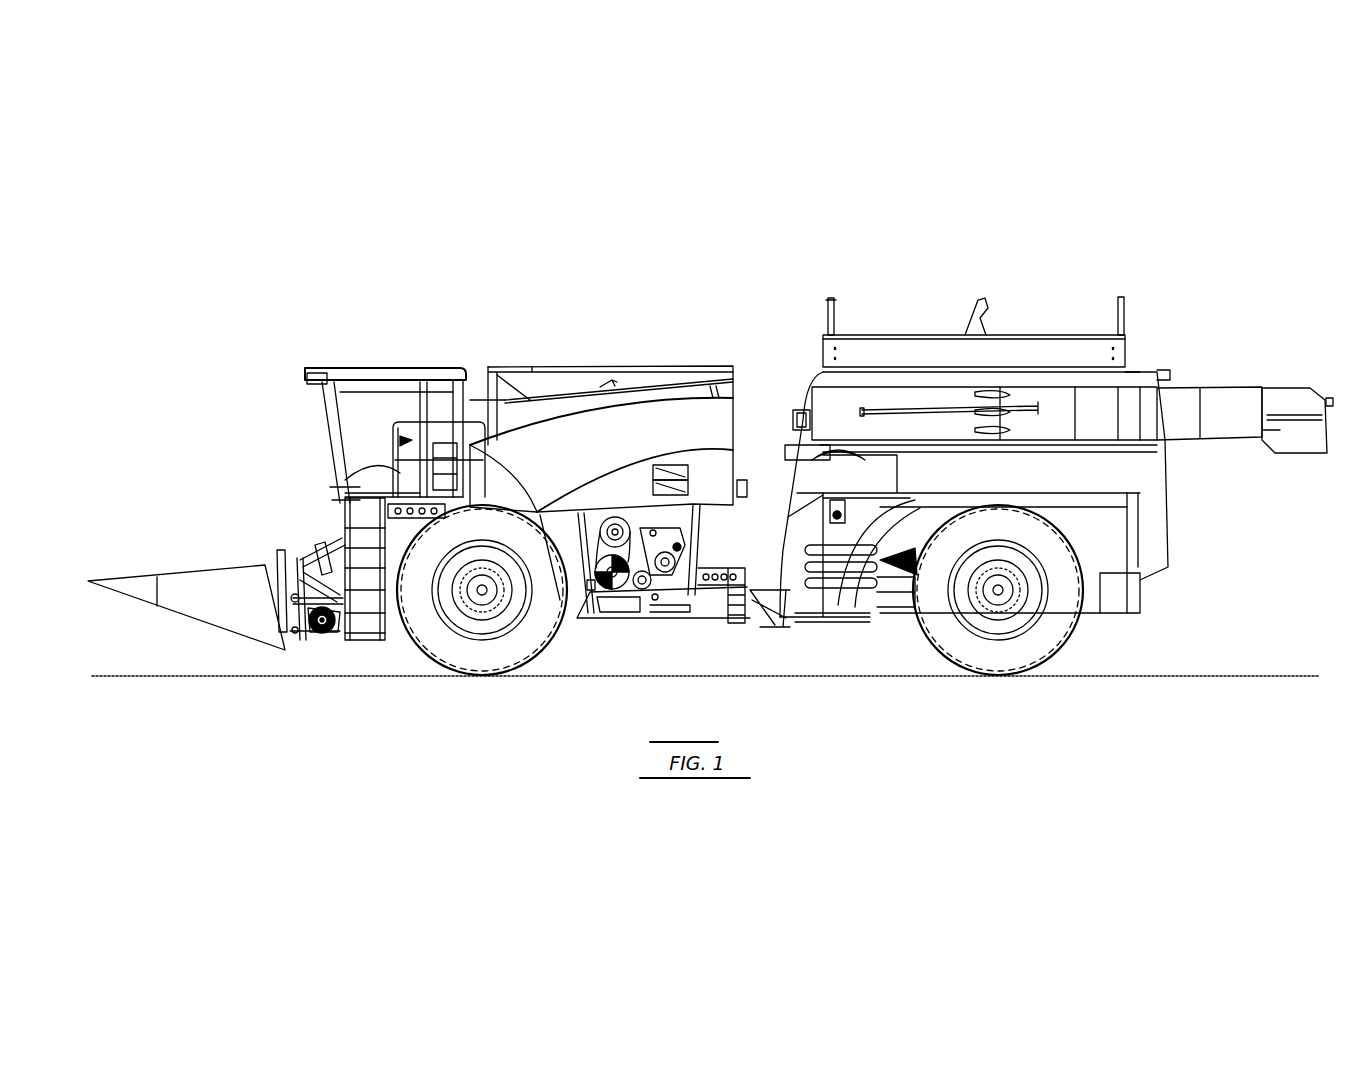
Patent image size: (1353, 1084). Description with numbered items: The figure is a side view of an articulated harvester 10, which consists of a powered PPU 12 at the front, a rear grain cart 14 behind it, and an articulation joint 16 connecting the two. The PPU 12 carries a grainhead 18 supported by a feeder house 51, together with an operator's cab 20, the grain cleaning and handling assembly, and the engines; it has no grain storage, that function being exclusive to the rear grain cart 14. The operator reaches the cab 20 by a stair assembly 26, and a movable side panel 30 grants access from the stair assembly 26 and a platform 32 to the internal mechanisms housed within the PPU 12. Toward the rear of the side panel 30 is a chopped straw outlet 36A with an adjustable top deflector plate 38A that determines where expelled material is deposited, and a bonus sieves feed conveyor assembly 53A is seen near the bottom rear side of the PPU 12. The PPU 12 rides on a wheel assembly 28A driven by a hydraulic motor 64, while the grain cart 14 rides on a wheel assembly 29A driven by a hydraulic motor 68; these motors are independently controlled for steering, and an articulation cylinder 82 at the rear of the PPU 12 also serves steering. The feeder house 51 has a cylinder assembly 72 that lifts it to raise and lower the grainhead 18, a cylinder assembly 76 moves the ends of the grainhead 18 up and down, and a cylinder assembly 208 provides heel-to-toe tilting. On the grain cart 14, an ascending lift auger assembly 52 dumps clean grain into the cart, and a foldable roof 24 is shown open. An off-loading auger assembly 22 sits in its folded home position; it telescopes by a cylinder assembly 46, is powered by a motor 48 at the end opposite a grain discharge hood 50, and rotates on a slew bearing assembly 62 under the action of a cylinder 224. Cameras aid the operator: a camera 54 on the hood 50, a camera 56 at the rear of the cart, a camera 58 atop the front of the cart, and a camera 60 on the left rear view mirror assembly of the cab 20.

The articulated harvester 10 is at (710, 483).
The powered PPU 12 is at (484, 514).
The rear grain cart 14 is at (1056, 484).
The articulation joint 16 is at (745, 522).
The grainhead 18 is at (216, 582).
The operator's cab 20 is at (393, 368).
The off-loading auger assembly 22 is at (1222, 400).
The foldable roof 24 is at (863, 345).
The stair assembly 26 is at (358, 643).
The wheel assembly 28A is at (492, 608).
The wheel assembly 29A is at (1014, 608).
The movable side panel 30 is at (705, 425).
The platform 32 is at (400, 473).
The MOG outlet 36A is at (662, 490).
The top deflector plate 38A is at (670, 468).
The cylinder assembly 46 is at (950, 410).
The motor 48 is at (797, 410).
The grain discharge hood 50 is at (1300, 433).
The feeder house 51 is at (327, 526).
The ascending lift auger assembly 52 is at (965, 298).
The bonus sieves feed conveyor assembly 53A is at (697, 552).
The camera 54 is at (1330, 395).
The camera 56 is at (1168, 375).
The camera 58 is at (838, 302).
The camera 60 is at (333, 372).
The slew bearing assembly 62 is at (840, 460).
The hydraulic motor 64 is at (495, 602).
The hydraulic motor 68 is at (1010, 603).
The cylinder assembly 72 is at (308, 560).
The cylinder assembly 76 is at (290, 547).
The articulation cylinder 82 is at (667, 618).
The cylinder assembly 208 is at (300, 632).
The cylinder 224 is at (797, 452).